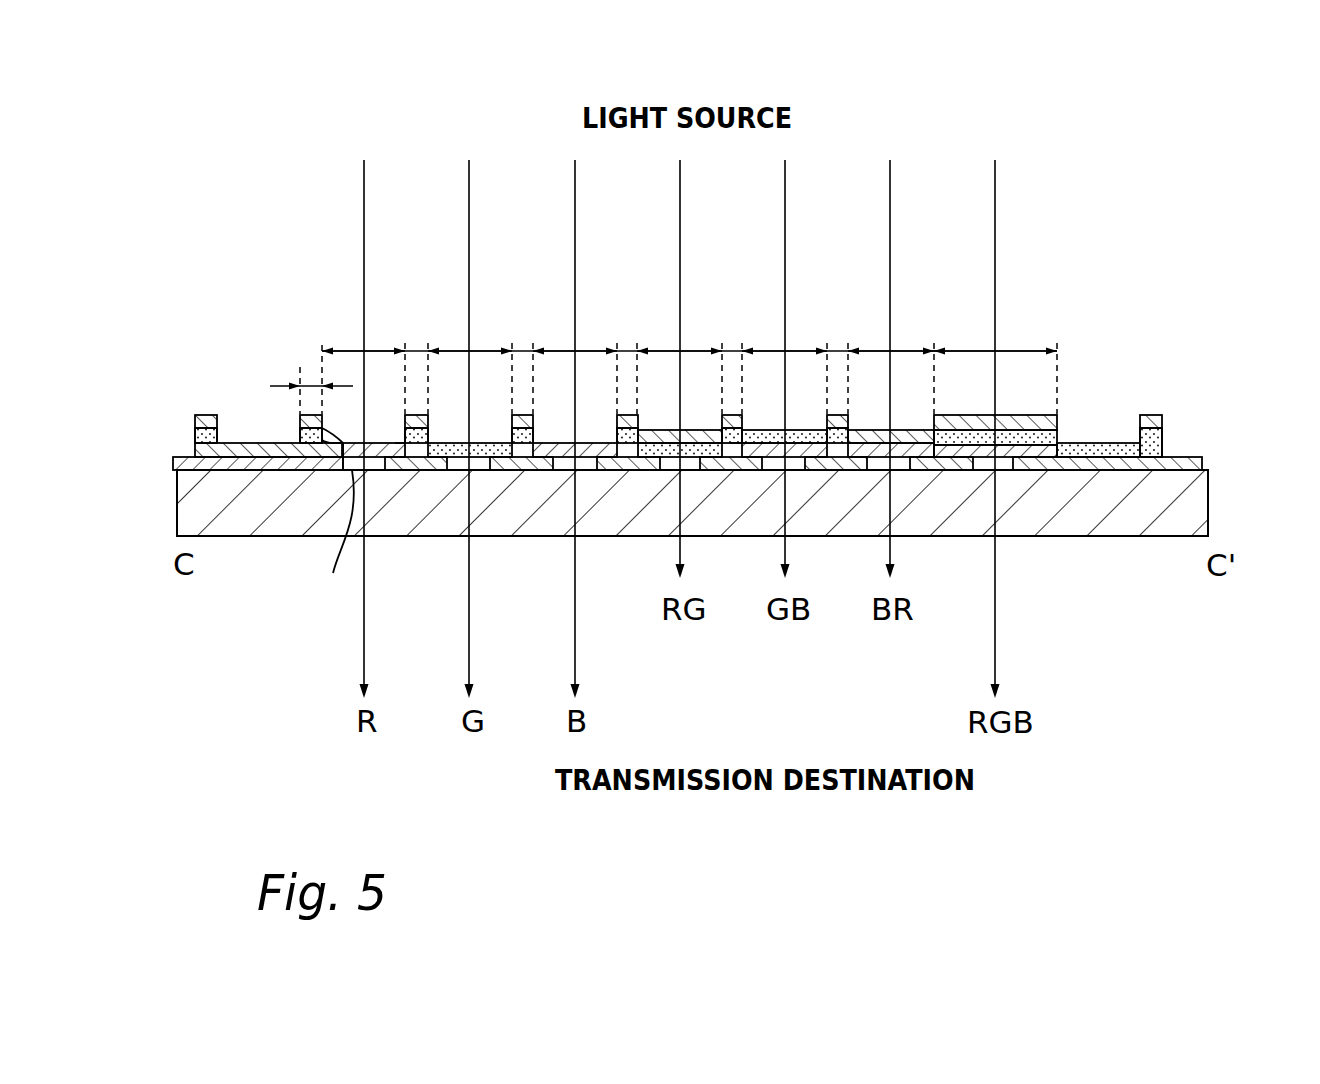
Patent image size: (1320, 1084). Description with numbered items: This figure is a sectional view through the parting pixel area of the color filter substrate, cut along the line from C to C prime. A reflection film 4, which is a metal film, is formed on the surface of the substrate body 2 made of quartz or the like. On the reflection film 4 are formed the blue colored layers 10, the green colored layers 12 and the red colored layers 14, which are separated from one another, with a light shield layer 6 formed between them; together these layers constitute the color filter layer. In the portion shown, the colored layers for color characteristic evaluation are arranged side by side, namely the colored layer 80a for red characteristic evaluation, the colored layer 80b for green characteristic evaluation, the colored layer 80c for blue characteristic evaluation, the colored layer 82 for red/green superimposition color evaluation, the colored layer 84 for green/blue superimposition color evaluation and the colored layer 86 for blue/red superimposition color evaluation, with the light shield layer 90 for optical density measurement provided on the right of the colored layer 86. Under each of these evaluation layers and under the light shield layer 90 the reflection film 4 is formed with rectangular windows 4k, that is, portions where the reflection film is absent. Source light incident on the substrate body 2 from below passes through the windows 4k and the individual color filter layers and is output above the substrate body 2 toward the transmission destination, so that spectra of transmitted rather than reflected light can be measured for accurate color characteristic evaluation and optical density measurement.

The substrate body 2 is at (1195, 510).
The reflection film 4 is at (1203, 465).
The rectangular windows 4k is at (334, 542).
The light shield layer 6 is at (312, 383).
The blue colored layers 10 is at (1163, 450).
The green colored layers 12 is at (1162, 437).
The red colored layers 14 is at (1165, 418).
The colored layer for red characteristic evaluation 80a is at (352, 348).
The colored layer for green characteristic evaluation 80b is at (457, 348).
The colored layer for blue characteristic evaluation 80c is at (562, 348).
The colored layer for red/green superimposition color characteristic evaluation 82 is at (667, 348).
The colored layer for green/blue superimposition color characteristic evaluation 84 is at (772, 348).
The colored layer for blue/red superimposition color characteristic evaluation 86 is at (877, 348).
The light shield layer for optical density measurement 90 is at (980, 348).